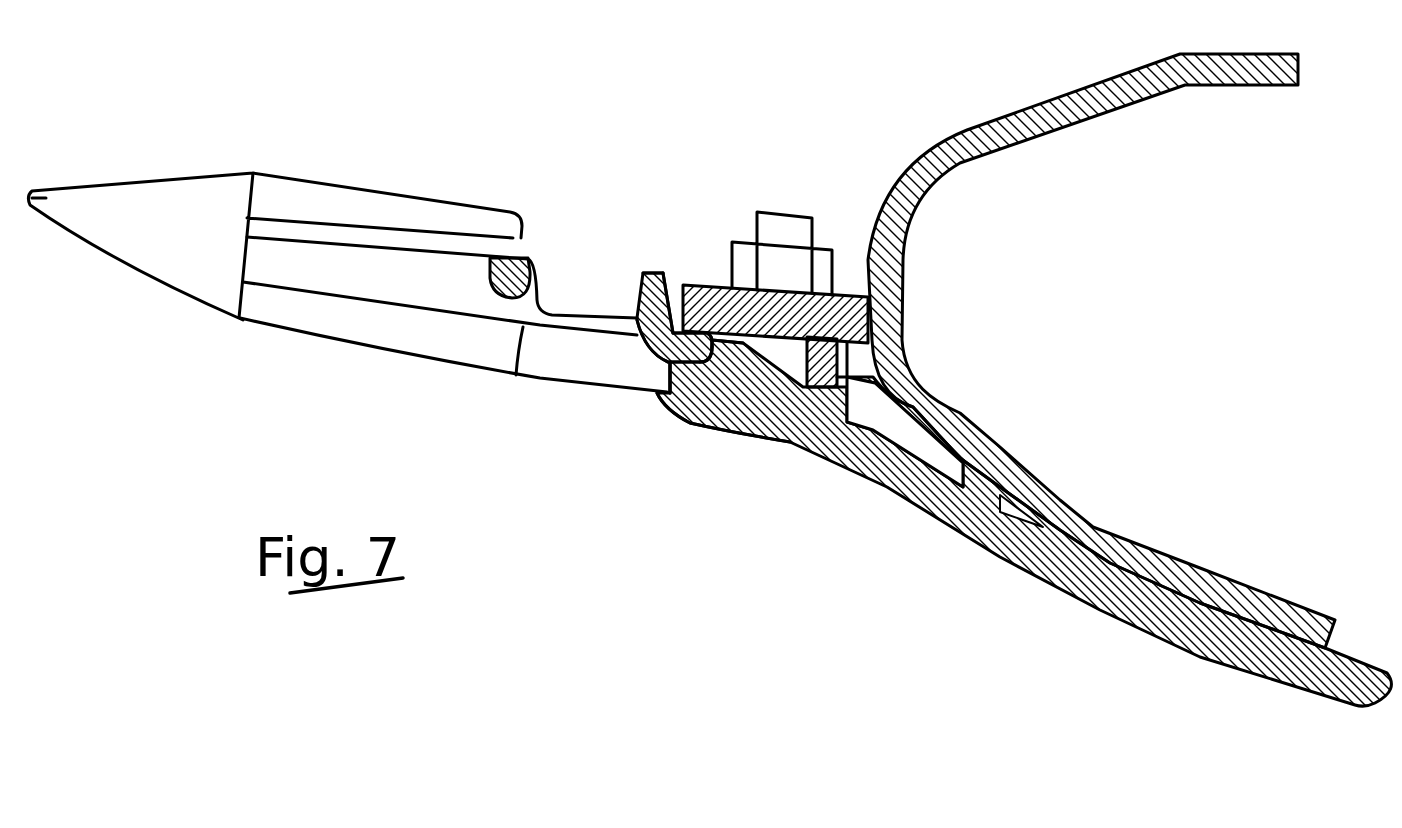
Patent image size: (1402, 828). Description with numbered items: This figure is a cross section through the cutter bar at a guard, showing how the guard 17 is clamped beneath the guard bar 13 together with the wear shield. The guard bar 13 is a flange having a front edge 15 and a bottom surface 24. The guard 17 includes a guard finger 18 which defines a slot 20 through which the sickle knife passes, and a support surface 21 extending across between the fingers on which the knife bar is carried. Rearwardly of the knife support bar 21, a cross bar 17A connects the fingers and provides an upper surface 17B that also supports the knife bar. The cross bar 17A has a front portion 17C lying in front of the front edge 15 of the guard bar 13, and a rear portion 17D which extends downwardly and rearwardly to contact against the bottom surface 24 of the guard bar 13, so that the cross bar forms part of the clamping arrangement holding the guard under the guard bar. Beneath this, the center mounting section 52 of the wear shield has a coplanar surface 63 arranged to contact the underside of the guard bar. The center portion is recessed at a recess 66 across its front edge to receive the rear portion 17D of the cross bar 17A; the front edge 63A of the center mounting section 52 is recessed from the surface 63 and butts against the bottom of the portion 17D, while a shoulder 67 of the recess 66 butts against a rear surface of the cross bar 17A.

The slot 20 is at (357, 235).
The guard finger 18 is at (430, 275).
The support surface 21 is at (527, 257).
The guard 17 is at (596, 190).
The cross bar 17A is at (672, 292).
The upper surface 17B is at (653, 273).
The front portion 17C is at (685, 300).
The rear portion 17D is at (660, 395).
The front edge 15 is at (725, 300).
The bottom surface 24 is at (767, 330).
The guard bar 13 is at (818, 295).
The front edge 63A is at (677, 379).
The coplanar surface 63 is at (728, 372).
The center mounting section 52 is at (754, 383).
The shoulder 67 is at (708, 367).
The recess 66 is at (700, 363).